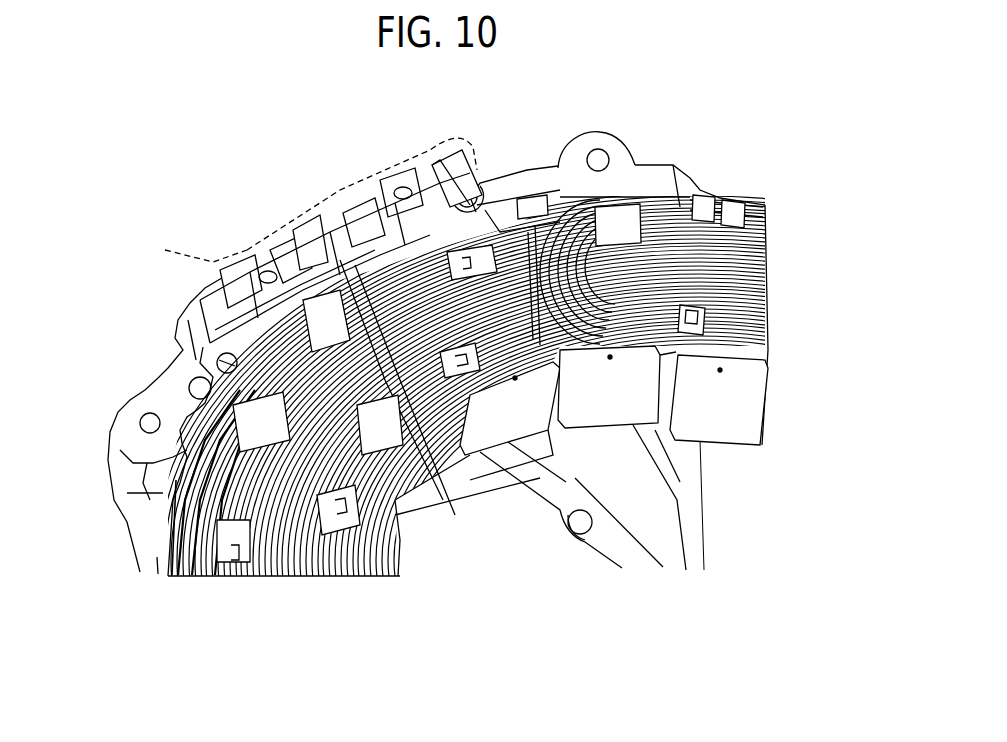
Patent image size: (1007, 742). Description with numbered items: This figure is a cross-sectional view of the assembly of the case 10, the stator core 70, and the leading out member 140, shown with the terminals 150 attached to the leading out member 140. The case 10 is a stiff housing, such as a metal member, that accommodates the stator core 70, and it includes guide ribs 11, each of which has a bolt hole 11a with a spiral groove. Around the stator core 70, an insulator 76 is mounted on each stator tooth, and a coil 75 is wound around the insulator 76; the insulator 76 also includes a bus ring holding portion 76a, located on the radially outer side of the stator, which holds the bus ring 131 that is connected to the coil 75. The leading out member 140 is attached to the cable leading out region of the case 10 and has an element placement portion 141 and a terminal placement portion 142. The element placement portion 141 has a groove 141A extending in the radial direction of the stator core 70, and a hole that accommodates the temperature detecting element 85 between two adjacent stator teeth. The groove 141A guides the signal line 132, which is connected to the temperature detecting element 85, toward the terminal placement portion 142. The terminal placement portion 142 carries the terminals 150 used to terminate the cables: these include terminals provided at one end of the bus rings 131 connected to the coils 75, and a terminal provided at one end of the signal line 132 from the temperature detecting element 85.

The case 10 is at (718, 110).
The guide rib 11 is at (527, 174).
The bolt hole 11a is at (599, 150).
The stator core 70 is at (222, 584).
The coil 75 is at (750, 307).
The insulator 76 is at (740, 375).
The bus ring holding portion 76a is at (747, 200).
The temperature detecting element 85 is at (443, 520).
The bus ring 131 is at (690, 203).
The signal line 132 is at (387, 520).
The leading out member 140 is at (165, 291).
The element placement portion 141 is at (363, 173).
The groove 141A is at (333, 187).
The terminal placement portion 142 is at (173, 257).
The terminal 150 is at (410, 172).